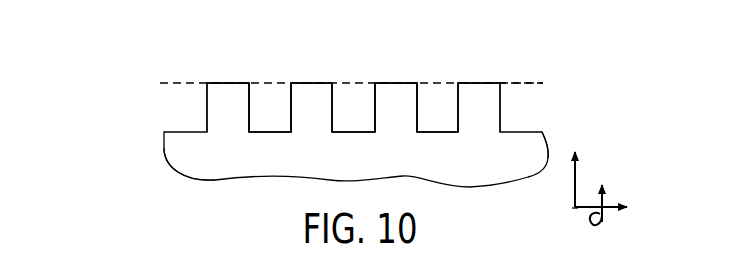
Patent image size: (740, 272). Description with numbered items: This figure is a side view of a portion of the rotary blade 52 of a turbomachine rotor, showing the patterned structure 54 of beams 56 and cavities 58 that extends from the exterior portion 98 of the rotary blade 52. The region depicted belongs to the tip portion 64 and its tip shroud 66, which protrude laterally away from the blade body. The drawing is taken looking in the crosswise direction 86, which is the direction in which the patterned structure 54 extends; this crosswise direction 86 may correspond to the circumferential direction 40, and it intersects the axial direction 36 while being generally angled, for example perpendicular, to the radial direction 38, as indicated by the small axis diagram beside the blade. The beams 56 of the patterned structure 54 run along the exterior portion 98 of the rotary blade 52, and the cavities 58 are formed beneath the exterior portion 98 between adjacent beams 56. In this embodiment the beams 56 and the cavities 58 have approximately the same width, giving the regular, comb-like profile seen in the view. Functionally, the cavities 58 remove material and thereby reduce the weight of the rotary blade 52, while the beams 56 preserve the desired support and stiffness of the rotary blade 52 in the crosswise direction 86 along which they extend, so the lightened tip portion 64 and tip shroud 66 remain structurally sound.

The rotary blade 52 is at (540, 42).
The patterned structure 54 is at (156, 82).
The beams 56 is at (317, 88).
The cavities 58 is at (266, 107).
The tip portion 64 is at (187, 162).
The tip shroud 66 is at (189, 164).
The exterior portion 98 is at (523, 83).
The axial direction 36 is at (610, 204).
The radial direction 38 is at (577, 188).
The circumferential direction 40 is at (598, 226).
The crosswise direction 86 is at (575, 207).